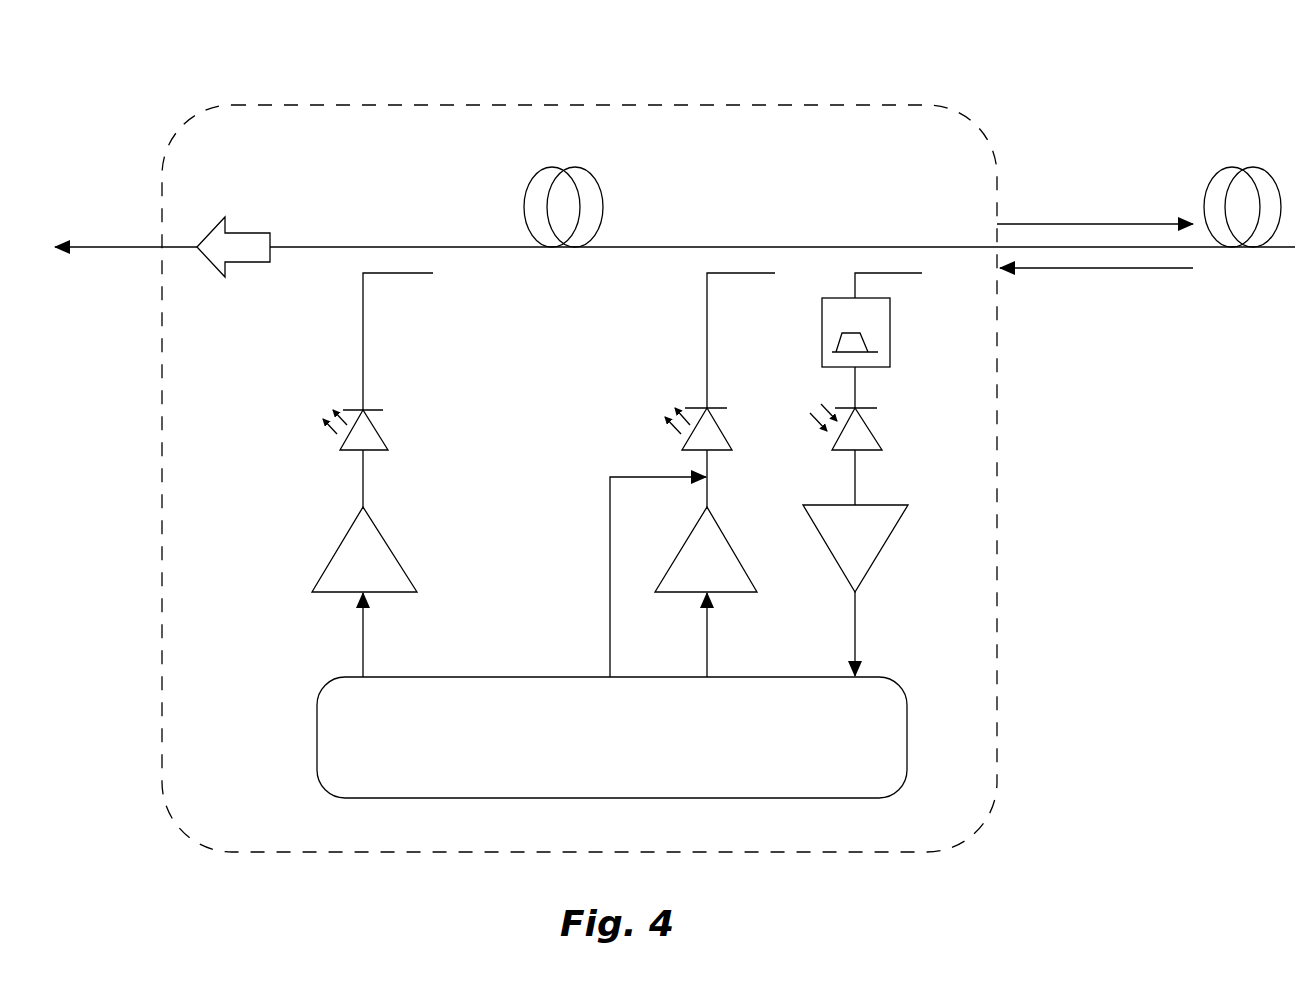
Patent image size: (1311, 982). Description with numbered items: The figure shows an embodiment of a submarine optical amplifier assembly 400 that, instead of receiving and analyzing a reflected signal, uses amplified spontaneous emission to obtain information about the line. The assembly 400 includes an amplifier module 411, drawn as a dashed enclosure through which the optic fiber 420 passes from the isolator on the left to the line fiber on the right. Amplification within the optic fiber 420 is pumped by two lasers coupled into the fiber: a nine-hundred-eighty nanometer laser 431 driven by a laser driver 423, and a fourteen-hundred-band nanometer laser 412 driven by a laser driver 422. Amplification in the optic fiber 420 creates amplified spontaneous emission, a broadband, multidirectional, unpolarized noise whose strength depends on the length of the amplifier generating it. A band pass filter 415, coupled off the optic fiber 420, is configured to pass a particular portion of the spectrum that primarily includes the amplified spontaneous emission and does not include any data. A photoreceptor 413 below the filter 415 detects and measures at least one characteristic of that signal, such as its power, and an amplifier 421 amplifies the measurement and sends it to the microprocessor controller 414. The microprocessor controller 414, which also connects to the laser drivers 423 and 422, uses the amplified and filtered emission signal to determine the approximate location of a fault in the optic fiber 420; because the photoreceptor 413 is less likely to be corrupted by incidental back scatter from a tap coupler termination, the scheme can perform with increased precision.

The submarine optical amplifier assembly 400 is at (640, 56).
The amplifier module 411 is at (842, 105).
The optic fiber 420 is at (120, 245).
The 980 nm laser 431 is at (386, 432).
The laser driver 423 is at (392, 545).
The 14xx nm laser 412 is at (717, 452).
The laser driver 422 is at (736, 593).
The band pass filter 415 is at (890, 310).
The photoreceptor 413 is at (864, 452).
The amplifier 421 is at (818, 533).
The microprocessor controller 414 is at (502, 676).